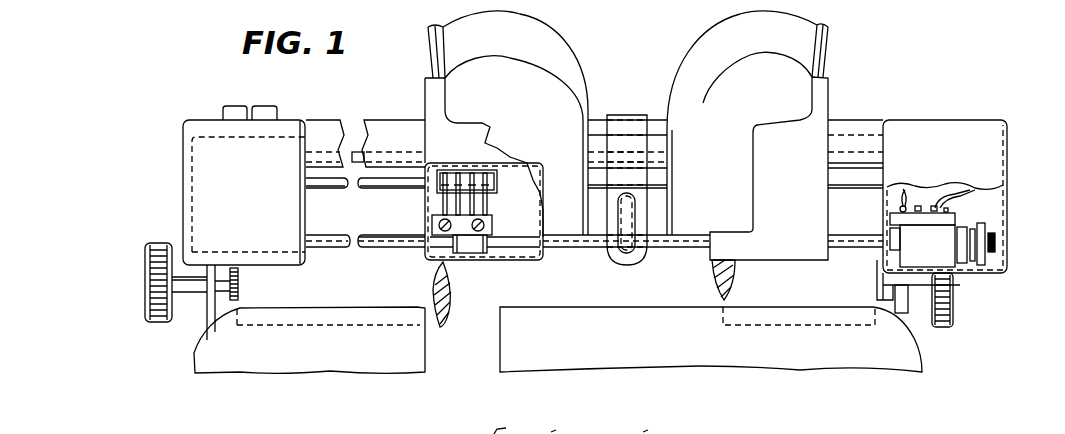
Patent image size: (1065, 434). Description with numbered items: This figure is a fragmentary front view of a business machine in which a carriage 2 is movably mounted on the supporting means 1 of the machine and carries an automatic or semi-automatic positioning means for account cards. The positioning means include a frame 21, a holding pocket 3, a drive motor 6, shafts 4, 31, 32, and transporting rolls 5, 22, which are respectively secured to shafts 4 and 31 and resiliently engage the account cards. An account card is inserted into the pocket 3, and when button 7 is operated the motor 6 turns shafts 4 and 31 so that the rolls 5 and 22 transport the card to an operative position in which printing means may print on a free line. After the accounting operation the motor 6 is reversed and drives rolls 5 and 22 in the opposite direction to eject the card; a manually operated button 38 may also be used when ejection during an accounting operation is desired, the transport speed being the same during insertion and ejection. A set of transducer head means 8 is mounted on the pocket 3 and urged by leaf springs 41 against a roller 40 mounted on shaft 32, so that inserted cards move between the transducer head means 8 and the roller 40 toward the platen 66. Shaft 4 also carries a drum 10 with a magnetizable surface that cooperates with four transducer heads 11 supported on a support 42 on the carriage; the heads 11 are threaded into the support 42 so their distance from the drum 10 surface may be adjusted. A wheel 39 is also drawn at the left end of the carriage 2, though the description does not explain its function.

The supporting means 1 is at (212, 355).
The carriage 2 is at (212, 313).
The holding pocket 3 is at (548, 103).
The shaft 4 is at (398, 245).
The transporting roll 5 is at (470, 253).
The drive motor 6 is at (207, 205).
The button 7 is at (224, 111).
The transducer head means 8 is at (458, 172).
The drum 10 is at (940, 258).
The transducer heads 11 is at (903, 207).
The frame 21 is at (184, 178).
The transporting roll 22 is at (492, 252).
The shaft 31 is at (371, 236).
The shaft 32 is at (326, 188).
The manually operated button 38 is at (278, 108).
The hand wheel 39 is at (155, 300).
The roller 40 is at (497, 184).
The leaf springs 41 is at (441, 206).
The support 42 is at (958, 215).
The platen 66 is at (245, 280).